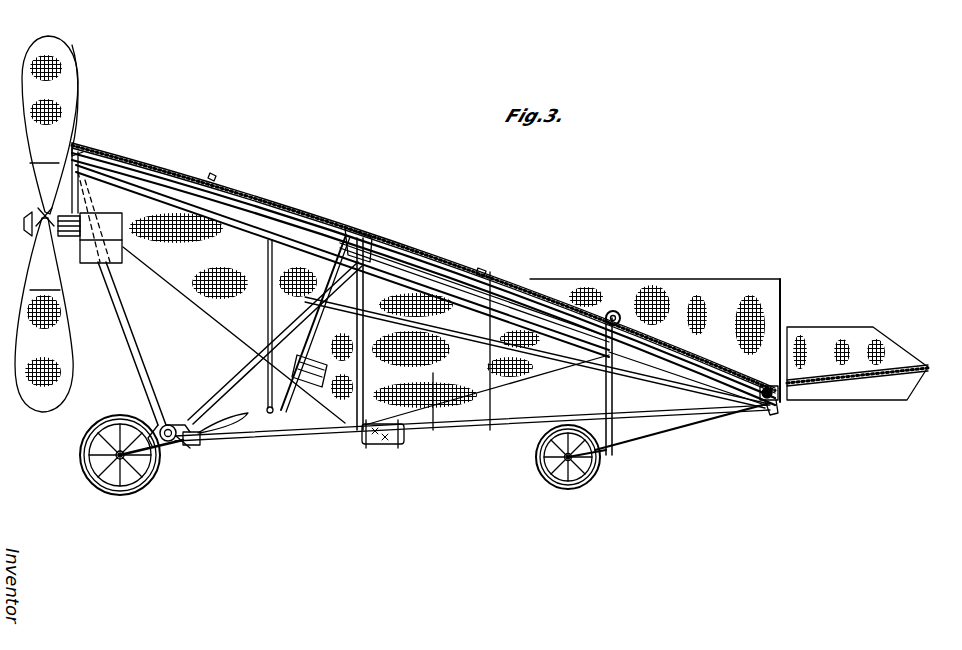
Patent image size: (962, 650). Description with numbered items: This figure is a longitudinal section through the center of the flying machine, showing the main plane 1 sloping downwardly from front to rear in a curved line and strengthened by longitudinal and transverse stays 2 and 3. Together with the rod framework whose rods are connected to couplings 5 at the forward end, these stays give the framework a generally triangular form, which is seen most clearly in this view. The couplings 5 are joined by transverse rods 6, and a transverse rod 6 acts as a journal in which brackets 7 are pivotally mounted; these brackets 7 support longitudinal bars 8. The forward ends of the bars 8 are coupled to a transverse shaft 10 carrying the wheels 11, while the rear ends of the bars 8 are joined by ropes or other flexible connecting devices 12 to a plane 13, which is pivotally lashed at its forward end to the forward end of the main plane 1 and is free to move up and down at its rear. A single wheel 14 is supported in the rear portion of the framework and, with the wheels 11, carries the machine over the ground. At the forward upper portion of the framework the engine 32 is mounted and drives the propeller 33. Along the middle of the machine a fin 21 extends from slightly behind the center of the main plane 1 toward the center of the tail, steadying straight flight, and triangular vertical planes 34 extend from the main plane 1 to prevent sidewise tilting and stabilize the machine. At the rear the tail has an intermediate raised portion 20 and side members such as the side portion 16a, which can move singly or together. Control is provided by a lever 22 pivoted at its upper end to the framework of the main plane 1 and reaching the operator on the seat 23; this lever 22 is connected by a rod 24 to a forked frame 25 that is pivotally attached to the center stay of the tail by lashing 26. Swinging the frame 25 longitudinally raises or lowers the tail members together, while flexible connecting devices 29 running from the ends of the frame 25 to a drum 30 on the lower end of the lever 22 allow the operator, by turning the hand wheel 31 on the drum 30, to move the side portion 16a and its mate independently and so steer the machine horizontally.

The main plane 1 is at (310, 208).
The longitudinal stays 2 is at (613, 310).
The transverse stays 3 is at (213, 175).
The couplings 5 is at (201, 436).
The transverse rods 6 is at (169, 441).
The brackets 7 is at (186, 445).
The longitudinal bars 8 is at (252, 420).
The transverse shaft 10 is at (116, 445).
The wheels 11 is at (118, 490).
The flexible connecting devices 12 is at (268, 310).
The plane 13 is at (215, 200).
The single wheel 14 is at (581, 470).
The side portion of the tail 16a is at (851, 343).
The intermediate raised portion 20 is at (889, 368).
The fin 21 is at (666, 285).
The lever 22 is at (356, 240).
The seat 23 is at (386, 446).
The rod 24 is at (368, 306).
The forked frame 25 is at (772, 410).
The lashing 26 is at (767, 386).
The flexible connecting devices 29 is at (483, 271).
The drum 30 is at (272, 402).
The hand wheel 31 is at (336, 405).
The engine 32 is at (103, 240).
The propeller 33 is at (62, 80).
The vertical planes 34 is at (434, 372).